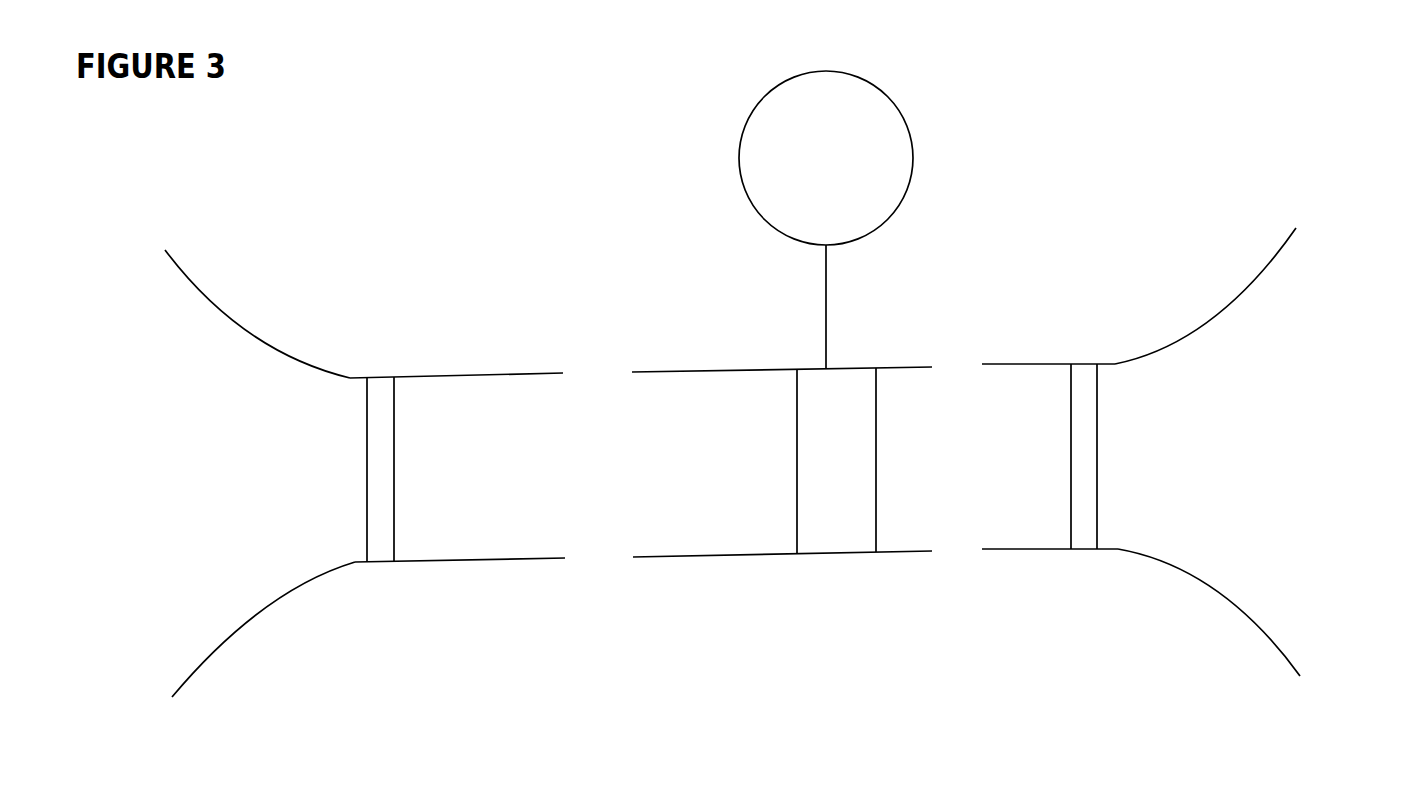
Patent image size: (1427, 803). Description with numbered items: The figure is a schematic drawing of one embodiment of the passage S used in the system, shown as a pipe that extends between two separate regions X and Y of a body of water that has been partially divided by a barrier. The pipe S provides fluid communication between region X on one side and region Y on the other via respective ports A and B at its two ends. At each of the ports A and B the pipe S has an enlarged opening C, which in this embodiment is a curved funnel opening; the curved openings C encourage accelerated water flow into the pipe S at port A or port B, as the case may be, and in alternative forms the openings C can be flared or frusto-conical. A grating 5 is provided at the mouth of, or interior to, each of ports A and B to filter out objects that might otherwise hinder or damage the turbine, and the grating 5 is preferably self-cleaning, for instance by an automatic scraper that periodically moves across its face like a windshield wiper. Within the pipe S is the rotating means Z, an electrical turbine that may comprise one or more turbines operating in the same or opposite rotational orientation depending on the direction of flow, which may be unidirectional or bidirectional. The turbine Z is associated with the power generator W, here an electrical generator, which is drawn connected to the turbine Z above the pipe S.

The grating 5 is at (734, 463).
The power generator W is at (826, 220).
The rotating means Z is at (782, 462).
The passage S is at (734, 463).
The port A is at (379, 313).
The port B is at (1087, 300).
The enlarged opening C is at (737, 434).
The region X is at (93, 452).
The region Y is at (1404, 431).